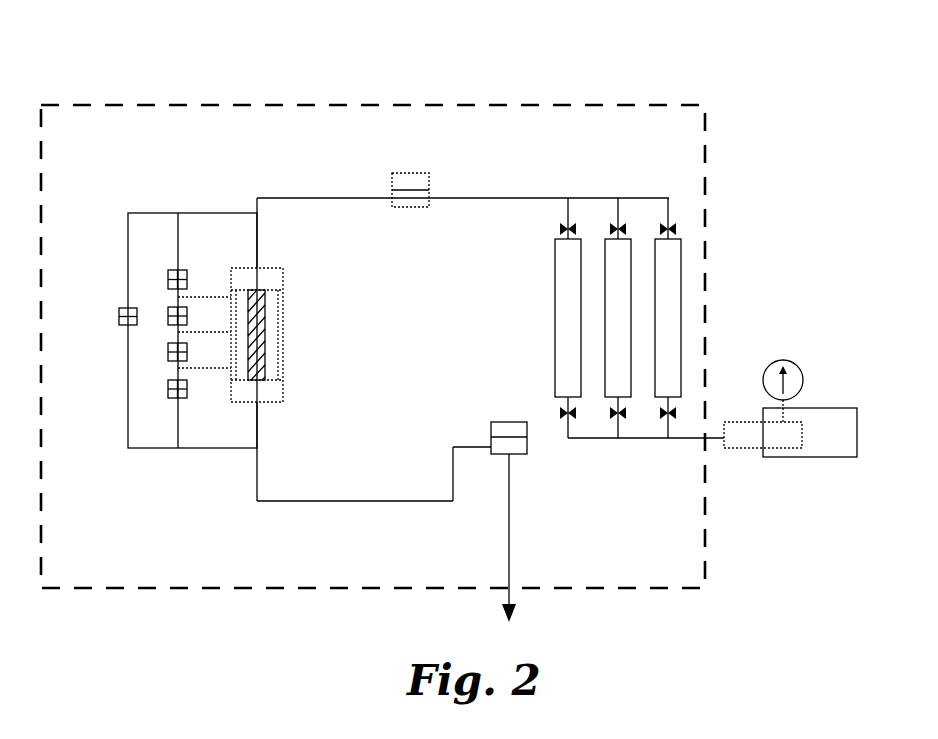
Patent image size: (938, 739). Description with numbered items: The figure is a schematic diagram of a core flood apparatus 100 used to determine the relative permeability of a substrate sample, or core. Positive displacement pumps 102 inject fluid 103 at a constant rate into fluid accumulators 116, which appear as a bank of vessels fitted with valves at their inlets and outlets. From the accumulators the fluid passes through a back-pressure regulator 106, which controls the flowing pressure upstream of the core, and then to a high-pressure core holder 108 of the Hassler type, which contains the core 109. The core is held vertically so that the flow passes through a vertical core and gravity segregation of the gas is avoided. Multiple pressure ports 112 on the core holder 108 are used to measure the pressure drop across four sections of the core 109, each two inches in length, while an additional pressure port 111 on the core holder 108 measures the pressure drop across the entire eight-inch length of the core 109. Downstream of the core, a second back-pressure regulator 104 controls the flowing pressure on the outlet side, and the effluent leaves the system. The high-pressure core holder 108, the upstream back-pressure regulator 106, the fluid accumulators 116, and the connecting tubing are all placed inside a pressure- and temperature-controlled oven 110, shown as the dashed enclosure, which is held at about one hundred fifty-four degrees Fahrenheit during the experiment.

The core flood apparatus 100 is at (678, 71).
The positive displacement pumps 102 is at (843, 413).
The fluid 103 is at (711, 440).
The back-pressure regulator 104 is at (508, 421).
The back-pressure regulator 106 is at (429, 207).
The high-pressure core holder 108 is at (283, 305).
The core 109 is at (262, 338).
The oven 110 is at (706, 187).
The pressure port 111 is at (119, 315).
The pressure ports 112 is at (168, 316).
The fluid accumulators 116 is at (570, 325).